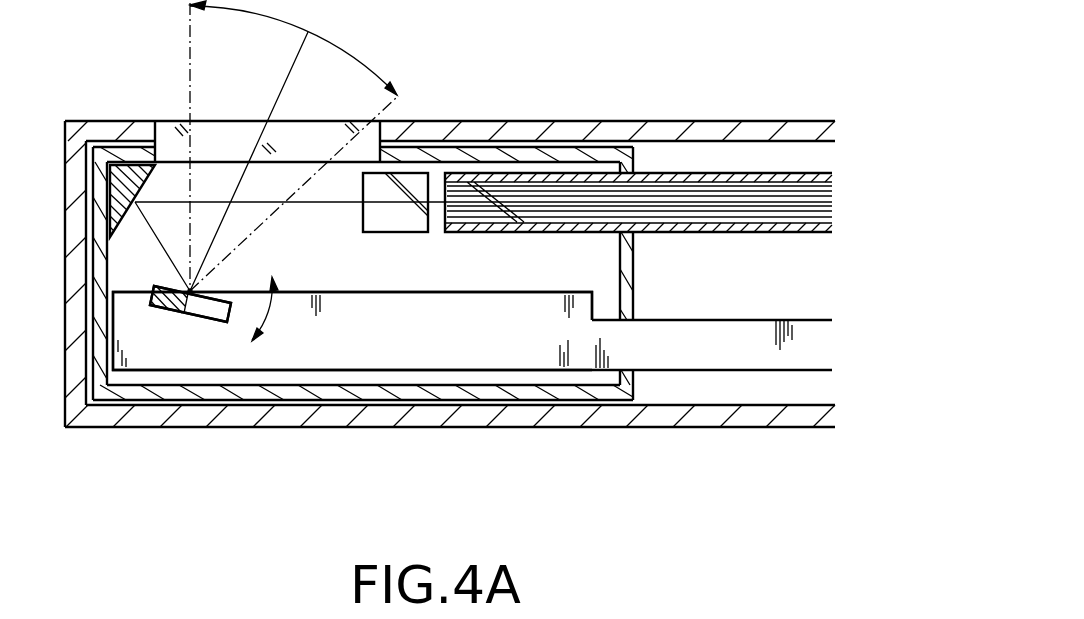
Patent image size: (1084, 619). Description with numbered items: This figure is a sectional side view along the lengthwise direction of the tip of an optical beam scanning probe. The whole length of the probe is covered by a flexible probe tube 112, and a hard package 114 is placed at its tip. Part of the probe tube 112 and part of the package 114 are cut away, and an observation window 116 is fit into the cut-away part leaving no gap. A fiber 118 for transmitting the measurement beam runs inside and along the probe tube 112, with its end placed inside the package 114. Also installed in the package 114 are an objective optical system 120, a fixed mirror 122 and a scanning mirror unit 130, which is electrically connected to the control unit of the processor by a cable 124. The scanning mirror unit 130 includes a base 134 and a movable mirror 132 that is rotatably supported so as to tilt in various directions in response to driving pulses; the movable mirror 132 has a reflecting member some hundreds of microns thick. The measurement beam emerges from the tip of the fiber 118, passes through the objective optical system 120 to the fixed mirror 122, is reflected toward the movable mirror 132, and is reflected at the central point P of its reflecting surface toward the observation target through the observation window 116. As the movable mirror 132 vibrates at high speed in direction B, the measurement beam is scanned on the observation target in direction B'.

The probe tube 112 is at (763, 133).
The package 114 is at (557, 152).
The observation window 116 is at (176, 120).
The fiber 118 is at (743, 233).
The objective optical system 120 is at (392, 223).
The fixed mirror 122 is at (112, 238).
The cable 124 is at (710, 371).
The scanning mirror unit 130 is at (273, 476).
The movable mirror 132 is at (203, 316).
The base 134 is at (272, 370).
The central point P is at (178, 311).
The direction B is at (270, 309).
The direction B' is at (293, 48).